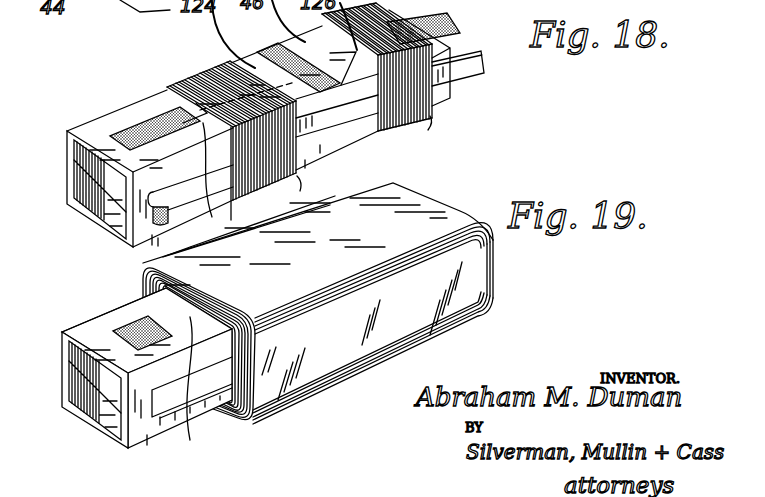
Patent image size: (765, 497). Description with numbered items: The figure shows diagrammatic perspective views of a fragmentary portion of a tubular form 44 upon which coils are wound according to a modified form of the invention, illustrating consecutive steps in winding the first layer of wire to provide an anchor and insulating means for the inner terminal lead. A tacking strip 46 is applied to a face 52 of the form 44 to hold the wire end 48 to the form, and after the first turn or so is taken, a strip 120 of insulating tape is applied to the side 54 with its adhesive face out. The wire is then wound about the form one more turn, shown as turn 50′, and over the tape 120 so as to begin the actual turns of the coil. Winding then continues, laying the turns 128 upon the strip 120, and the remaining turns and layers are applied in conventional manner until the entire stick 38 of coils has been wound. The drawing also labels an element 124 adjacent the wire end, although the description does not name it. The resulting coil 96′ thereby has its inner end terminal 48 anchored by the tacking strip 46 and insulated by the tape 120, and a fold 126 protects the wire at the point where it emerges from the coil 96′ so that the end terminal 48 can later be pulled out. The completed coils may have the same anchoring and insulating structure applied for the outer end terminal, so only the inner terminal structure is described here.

In FIG. 19, the stick of coils 38 is at (411, 366).
In FIG. 18, the form 44 is at (100, 210).
In FIG. 19, the form 44 is at (100, 420).
In FIG. 18, the tacking strip 46 is at (345, 133).
In FIG. 19, the tacking strip 46 is at (173, 407).
In FIG. 18, the wire end 48 is at (232, 205).
In FIG. 18, the turn 50′ is at (165, 95).
In FIG. 18, the face 52 is at (262, 152).
In FIG. 19, the face 52 is at (185, 387).
In FIG. 18, the side 54 is at (130, 116).
In FIG. 19, the side 54 is at (114, 315).
In FIG. 19, the coil 96′ is at (322, 403).
In FIG. 18, the strip of insulating tape 120 is at (157, 110).
In FIG. 19, the strip of insulating tape 120 is at (138, 322).
In FIG. 18, the lead wire 124 is at (212, 217).
In FIG. 19, the lead wire 124 is at (189, 440).
In FIG. 18, the fold 126 is at (200, 110).
In FIG. 18, the turns 128 is at (300, 180).